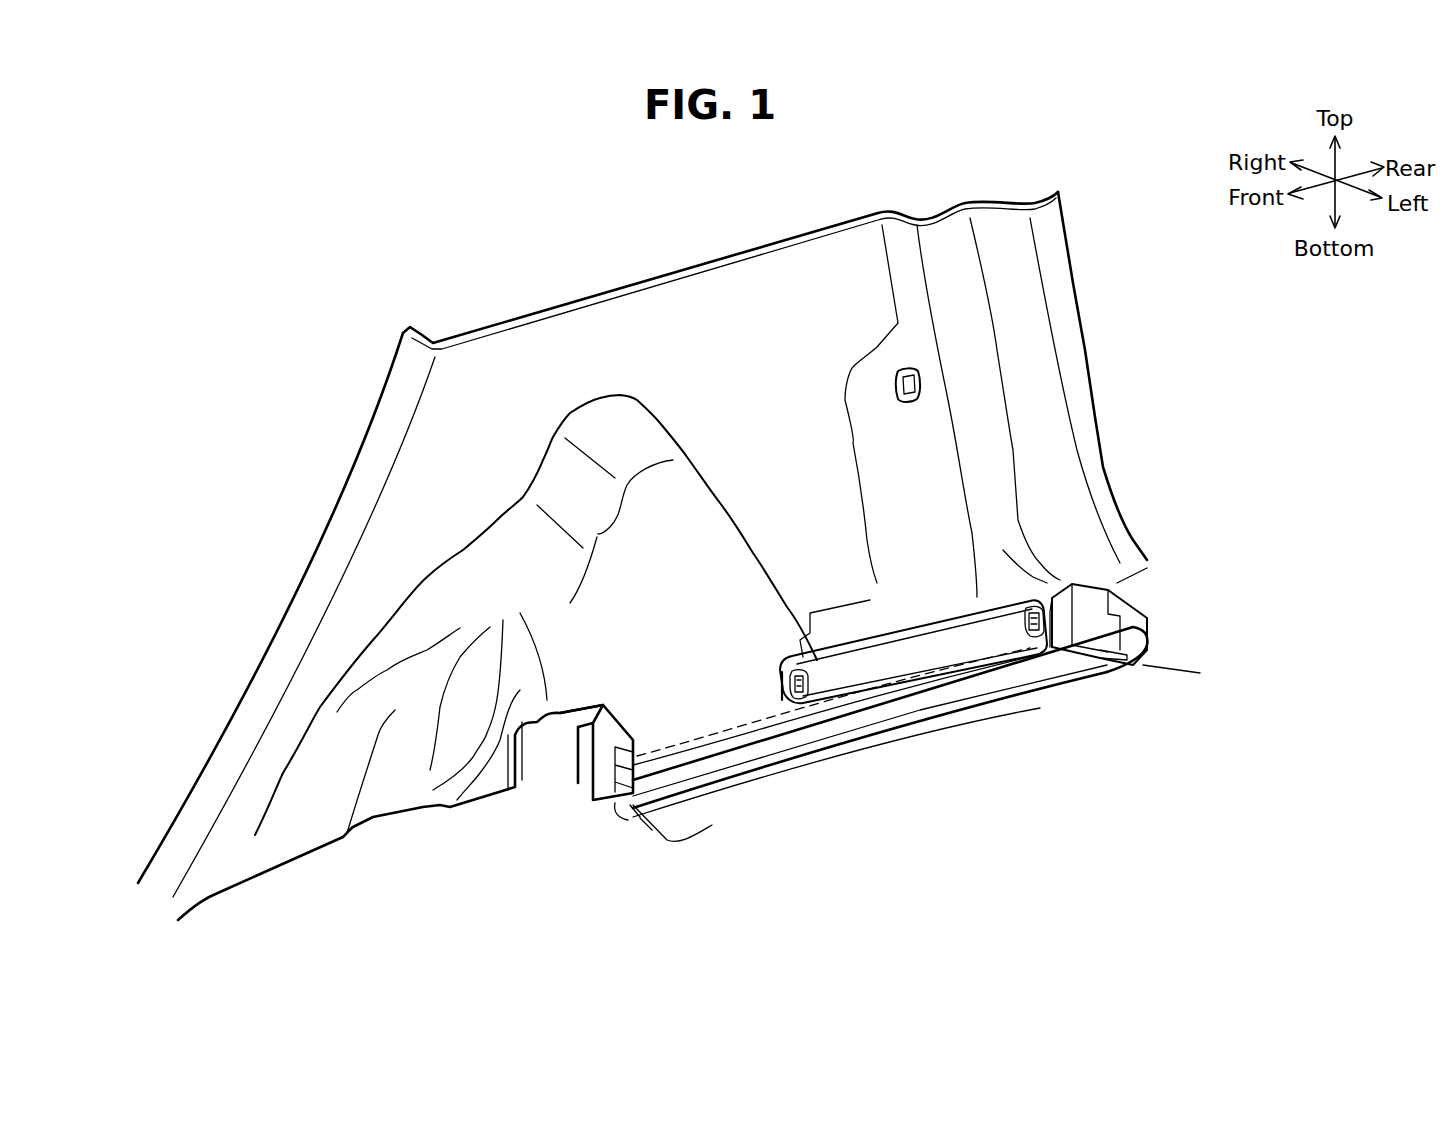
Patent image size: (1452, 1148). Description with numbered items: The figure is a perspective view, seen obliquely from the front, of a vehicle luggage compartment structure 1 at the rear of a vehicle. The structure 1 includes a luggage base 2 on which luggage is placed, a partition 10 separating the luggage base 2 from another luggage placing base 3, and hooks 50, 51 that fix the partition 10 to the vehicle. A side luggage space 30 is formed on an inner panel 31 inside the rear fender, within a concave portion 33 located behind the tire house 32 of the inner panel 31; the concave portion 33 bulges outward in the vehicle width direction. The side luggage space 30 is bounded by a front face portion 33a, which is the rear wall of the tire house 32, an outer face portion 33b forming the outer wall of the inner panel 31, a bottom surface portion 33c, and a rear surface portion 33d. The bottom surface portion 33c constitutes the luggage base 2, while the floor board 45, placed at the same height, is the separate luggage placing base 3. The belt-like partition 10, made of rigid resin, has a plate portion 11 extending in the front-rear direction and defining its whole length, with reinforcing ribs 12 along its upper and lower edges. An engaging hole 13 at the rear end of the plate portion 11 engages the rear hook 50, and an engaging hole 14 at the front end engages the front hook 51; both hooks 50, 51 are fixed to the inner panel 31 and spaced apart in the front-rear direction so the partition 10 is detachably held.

The vehicle luggage compartment structure 1 is at (1029, 496).
The luggage base 2 is at (893, 612).
The luggage placing base 3 is at (1163, 693).
The partition 10 is at (917, 672).
The plate portion 11 is at (977, 640).
The reinforcing ribs 12 is at (927, 623).
The engaging hole 13 is at (1039, 623).
The engaging hole 14 is at (790, 680).
The side luggage space 30 is at (752, 400).
The inner panel 31 is at (582, 333).
The tire house 32 is at (650, 530).
The concave portion 33 is at (815, 487).
The front face portion 33a is at (760, 567).
The outer face portion 33b is at (717, 457).
The bottom surface portion 33c is at (840, 617).
The rear surface portion 33d is at (913, 490).
The floor board 45 is at (1147, 673).
The hook 50 is at (1033, 628).
The hook 51 is at (800, 690).